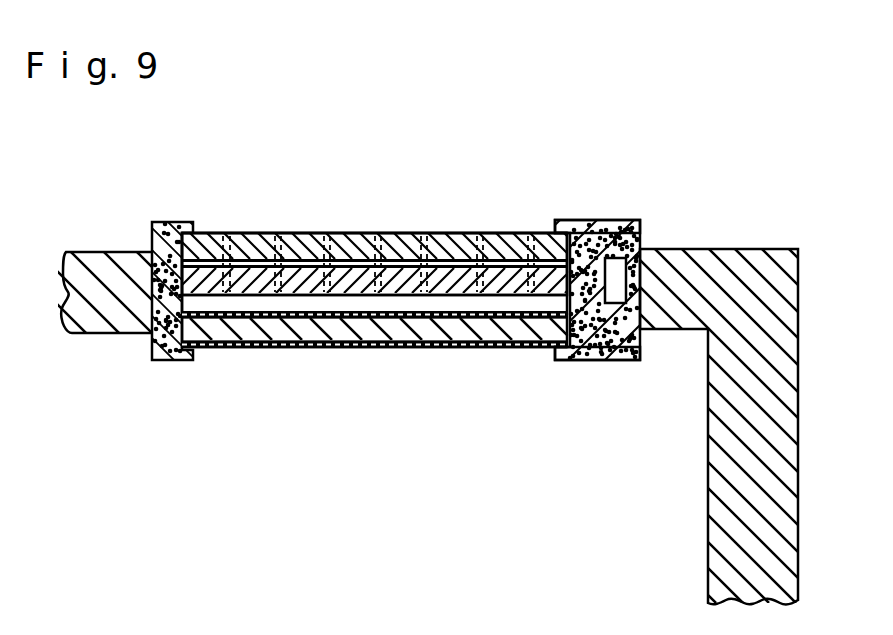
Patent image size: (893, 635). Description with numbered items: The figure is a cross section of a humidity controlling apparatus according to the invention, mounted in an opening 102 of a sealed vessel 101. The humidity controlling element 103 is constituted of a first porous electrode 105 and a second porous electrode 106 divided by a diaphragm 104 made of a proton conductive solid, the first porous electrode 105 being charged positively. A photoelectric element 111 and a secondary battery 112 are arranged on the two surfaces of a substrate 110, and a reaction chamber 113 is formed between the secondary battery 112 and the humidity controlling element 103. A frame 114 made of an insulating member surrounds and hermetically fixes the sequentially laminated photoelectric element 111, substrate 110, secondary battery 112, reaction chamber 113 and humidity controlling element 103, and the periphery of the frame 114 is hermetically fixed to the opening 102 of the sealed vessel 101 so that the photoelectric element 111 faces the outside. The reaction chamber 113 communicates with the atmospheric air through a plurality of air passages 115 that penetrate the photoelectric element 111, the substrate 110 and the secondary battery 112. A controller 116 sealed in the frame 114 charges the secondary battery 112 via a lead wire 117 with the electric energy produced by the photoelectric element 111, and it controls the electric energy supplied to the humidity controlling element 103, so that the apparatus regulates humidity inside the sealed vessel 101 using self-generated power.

The sealed vessel 101 is at (748, 249).
The opening 102 is at (367, 205).
The humidity controlling element 103 is at (204, 348).
The diaphragm 104 is at (425, 332).
The first porous electrode 105 is at (343, 346).
The second porous electrode 106 is at (510, 317).
The substrate 110 is at (452, 233).
The photoelectric element 111 is at (211, 232).
The secondary battery 112 is at (150, 242).
The reaction chamber 113 is at (253, 305).
The frame 114 is at (574, 233).
The air passages 115 is at (278, 233).
The controller 116 is at (636, 220).
The lead wire 117 is at (613, 360).